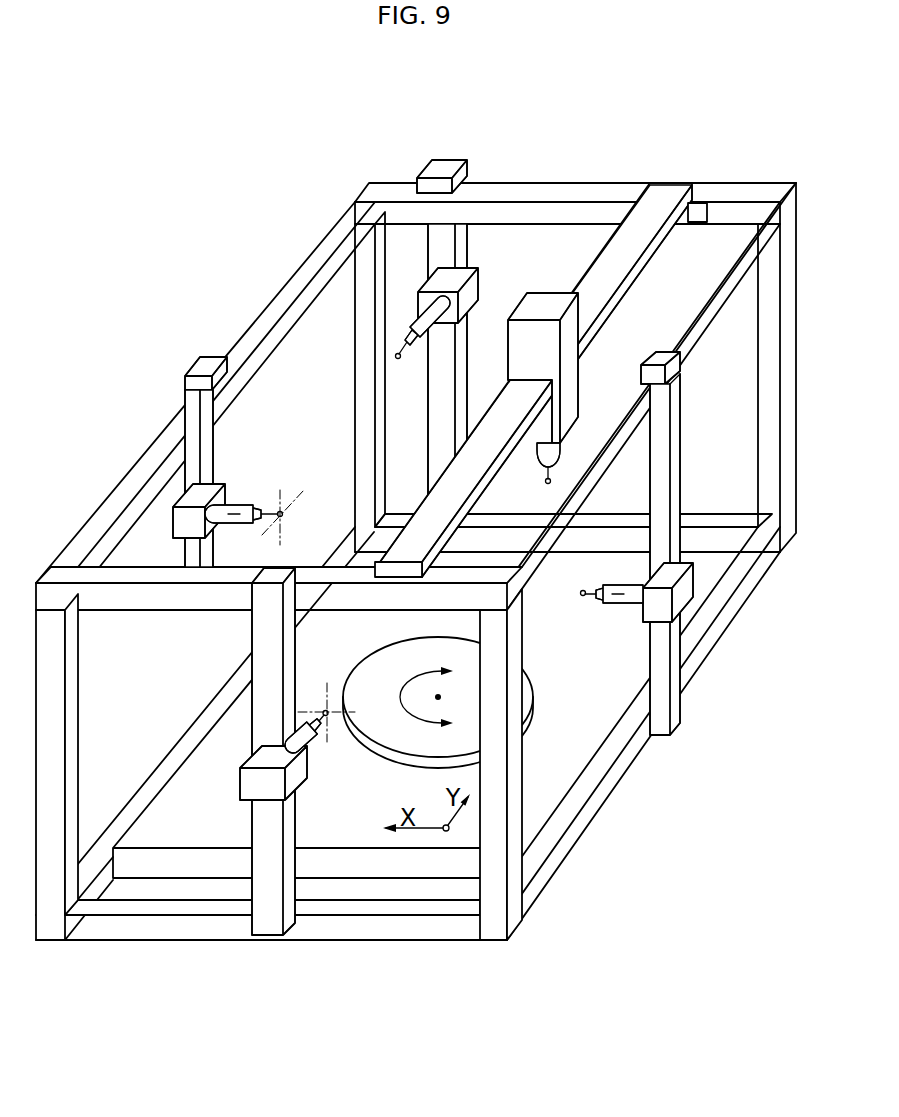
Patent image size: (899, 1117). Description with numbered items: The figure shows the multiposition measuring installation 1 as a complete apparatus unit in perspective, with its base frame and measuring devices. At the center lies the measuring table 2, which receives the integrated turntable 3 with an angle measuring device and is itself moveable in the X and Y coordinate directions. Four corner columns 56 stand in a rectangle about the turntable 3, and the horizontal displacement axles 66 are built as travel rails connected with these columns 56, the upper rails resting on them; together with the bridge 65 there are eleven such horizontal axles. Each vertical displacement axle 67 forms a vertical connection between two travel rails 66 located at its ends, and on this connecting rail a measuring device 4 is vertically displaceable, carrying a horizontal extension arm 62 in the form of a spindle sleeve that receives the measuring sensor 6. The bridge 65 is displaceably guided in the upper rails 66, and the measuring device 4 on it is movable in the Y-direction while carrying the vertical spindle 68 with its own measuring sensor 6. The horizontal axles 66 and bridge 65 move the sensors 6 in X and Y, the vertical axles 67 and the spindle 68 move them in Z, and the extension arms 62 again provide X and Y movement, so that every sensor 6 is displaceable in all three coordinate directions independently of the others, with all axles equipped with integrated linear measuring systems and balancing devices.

The multiposition measuring installation 1 is at (229, 268).
The measuring table 2 is at (378, 920).
The turntable 3 is at (405, 740).
The measuring device 4 is at (419, 294).
The measuring sensor 6 is at (399, 359).
The corner column 56 is at (356, 345).
The horizontal extension arm 62 is at (437, 327).
The bridge 65 is at (660, 252).
The horizontal displacement axle 66 is at (542, 192).
The vertical displacement axle 67 is at (465, 262).
The vertical spindle 68 is at (561, 450).